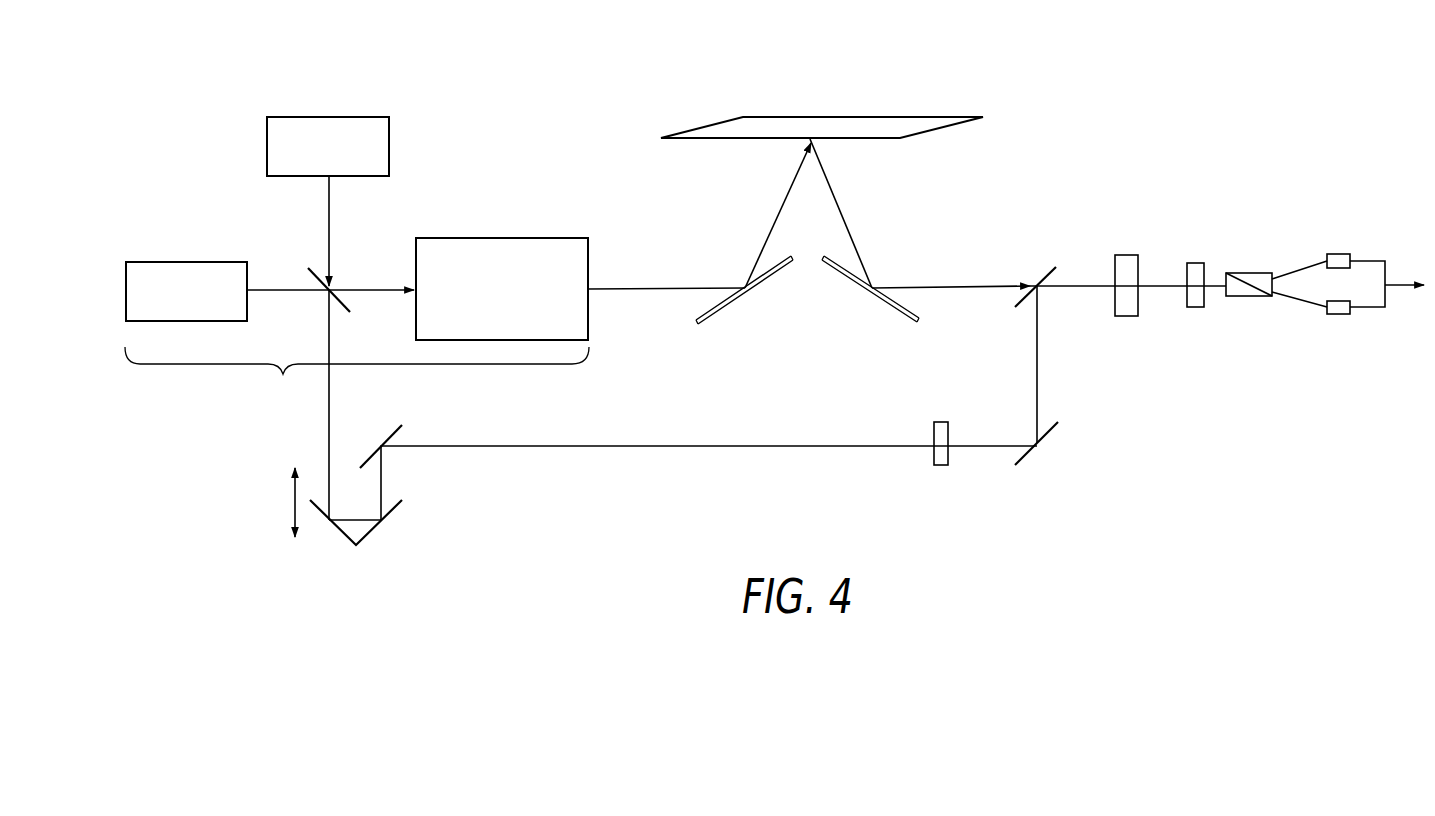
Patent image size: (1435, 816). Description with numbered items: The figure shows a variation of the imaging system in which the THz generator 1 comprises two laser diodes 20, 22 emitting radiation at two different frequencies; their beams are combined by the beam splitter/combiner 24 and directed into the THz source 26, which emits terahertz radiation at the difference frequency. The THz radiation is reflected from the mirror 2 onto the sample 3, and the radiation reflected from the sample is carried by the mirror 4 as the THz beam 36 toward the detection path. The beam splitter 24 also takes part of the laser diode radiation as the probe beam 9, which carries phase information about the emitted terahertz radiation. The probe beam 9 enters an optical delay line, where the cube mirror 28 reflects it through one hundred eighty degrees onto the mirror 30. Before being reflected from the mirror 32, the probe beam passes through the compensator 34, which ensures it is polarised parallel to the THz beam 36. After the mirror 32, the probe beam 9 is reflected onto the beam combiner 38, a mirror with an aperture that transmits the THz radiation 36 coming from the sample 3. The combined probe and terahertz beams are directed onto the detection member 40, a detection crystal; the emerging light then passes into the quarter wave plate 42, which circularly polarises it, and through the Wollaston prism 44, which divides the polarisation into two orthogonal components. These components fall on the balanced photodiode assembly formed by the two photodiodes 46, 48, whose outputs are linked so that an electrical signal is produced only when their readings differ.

The THz generator 1 is at (276, 384).
The mirror 2 is at (734, 312).
The sample 3 is at (862, 118).
The mirror 4 is at (888, 310).
The probe beam 9 is at (326, 429).
The laser diode 20 is at (188, 258).
The laser diode 22 is at (330, 113).
The beam splitter/combiner 24 is at (344, 280).
The THz source 26 is at (503, 236).
The cube mirror 28 is at (374, 540).
The mirror 30 is at (402, 432).
The mirror 32 is at (1052, 436).
The compensator 34 is at (942, 468).
The THz beam 36 is at (946, 278).
The beam combiner 38 is at (1044, 265).
The detection member 40 is at (1143, 248).
The quarter wave plate 42 is at (1196, 312).
The Wollaston prism 44 is at (1248, 270).
The photodiode 46 is at (1339, 252).
The photodiode 48 is at (1339, 317).